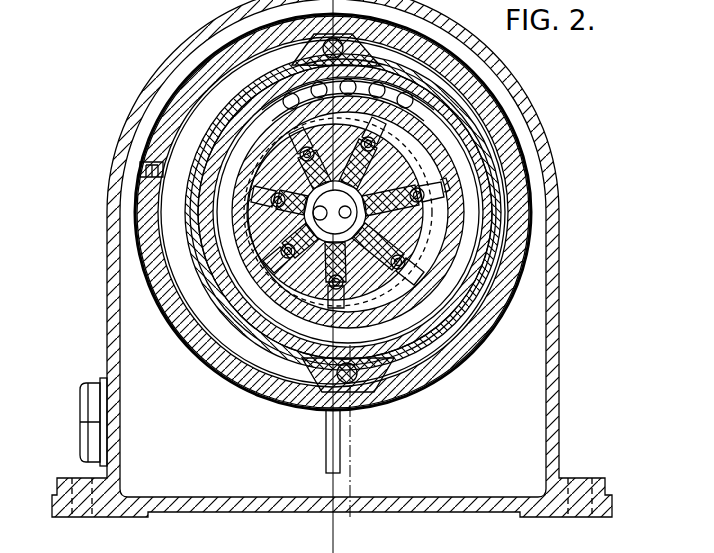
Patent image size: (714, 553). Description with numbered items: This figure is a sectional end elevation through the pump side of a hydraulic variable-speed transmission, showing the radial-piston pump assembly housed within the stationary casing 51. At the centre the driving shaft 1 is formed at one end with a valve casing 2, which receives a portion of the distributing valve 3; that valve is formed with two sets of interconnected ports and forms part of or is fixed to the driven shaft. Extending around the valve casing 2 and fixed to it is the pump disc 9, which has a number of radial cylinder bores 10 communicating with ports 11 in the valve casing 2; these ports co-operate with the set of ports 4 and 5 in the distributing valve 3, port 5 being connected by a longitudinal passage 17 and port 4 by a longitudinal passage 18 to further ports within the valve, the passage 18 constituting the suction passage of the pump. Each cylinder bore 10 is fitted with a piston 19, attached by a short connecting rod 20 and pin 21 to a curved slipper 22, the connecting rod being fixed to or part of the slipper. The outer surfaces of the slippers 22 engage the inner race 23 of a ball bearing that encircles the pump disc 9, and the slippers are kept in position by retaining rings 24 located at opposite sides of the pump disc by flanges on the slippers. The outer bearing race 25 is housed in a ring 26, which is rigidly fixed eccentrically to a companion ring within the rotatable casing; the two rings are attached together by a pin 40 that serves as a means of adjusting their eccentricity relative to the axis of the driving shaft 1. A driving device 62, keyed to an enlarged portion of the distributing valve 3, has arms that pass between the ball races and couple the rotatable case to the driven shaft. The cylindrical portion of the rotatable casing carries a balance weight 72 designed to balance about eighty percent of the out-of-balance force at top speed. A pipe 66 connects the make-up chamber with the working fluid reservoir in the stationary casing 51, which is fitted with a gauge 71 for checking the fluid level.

The driving shaft 1 is at (355, 441).
The valve casing 2 is at (335, 212).
The distributing valve 3 is at (355, 275).
The port 4 is at (431, 200).
The port 5 is at (290, 248).
The pump disc 9 is at (391, 187).
The radial cylinder bores 10 is at (338, 212).
The ports 11 is at (395, 254).
The longitudinal passage 17 is at (291, 181).
The longitudinal passage 18 is at (426, 211).
The piston 19 is at (379, 164).
The connecting rod 20 is at (382, 130).
The pin 21 is at (385, 145).
The curved slipper 22 is at (412, 104).
The inner race 23 is at (453, 193).
The retaining rings 24 is at (388, 370).
The outer bearing race 25 is at (452, 312).
The ring 26 is at (468, 305).
The pin 40 is at (348, 390).
The stationary casing 51 is at (177, 500).
The driving device 62 is at (210, 290).
The pipe 66 is at (327, 445).
The gauge 71 is at (83, 417).
The balance weight 72 is at (165, 152).